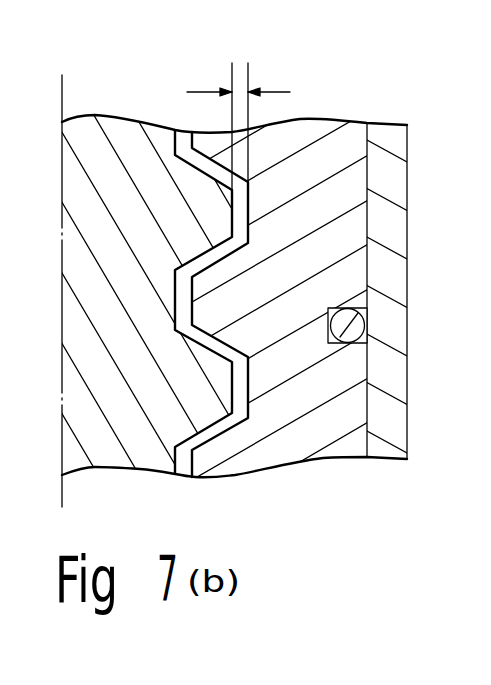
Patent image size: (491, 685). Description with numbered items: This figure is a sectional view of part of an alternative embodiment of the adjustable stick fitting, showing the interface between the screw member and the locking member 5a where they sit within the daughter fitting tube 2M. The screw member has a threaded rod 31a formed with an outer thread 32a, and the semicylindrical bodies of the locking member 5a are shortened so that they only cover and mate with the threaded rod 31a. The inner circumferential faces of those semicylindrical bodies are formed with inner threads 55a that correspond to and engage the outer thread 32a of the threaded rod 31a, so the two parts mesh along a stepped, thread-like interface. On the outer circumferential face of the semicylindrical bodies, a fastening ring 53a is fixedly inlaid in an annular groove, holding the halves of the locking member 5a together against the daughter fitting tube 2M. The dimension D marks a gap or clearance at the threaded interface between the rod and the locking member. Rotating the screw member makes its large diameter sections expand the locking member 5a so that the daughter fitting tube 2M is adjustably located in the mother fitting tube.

The threaded rod 31a is at (112, 130).
The outer thread 32a is at (212, 373).
The locking member 5a is at (330, 143).
The inner threads 55a is at (247, 367).
The daughter fitting tube 2M is at (393, 185).
The fastening ring 53a is at (358, 325).
The gap width D is at (238, 101).